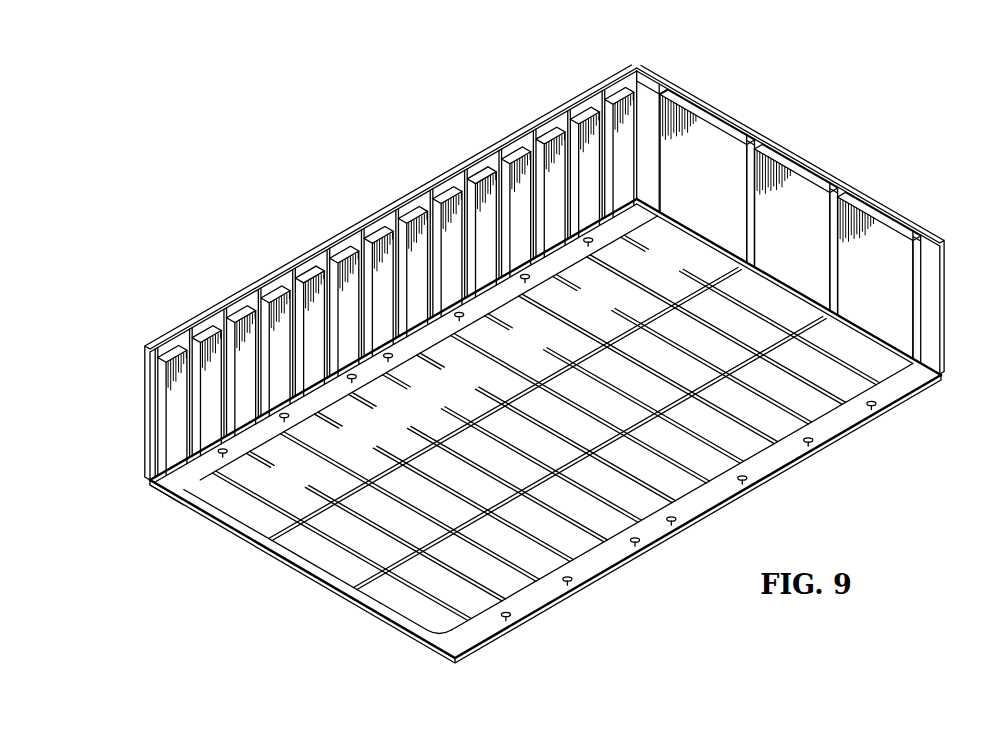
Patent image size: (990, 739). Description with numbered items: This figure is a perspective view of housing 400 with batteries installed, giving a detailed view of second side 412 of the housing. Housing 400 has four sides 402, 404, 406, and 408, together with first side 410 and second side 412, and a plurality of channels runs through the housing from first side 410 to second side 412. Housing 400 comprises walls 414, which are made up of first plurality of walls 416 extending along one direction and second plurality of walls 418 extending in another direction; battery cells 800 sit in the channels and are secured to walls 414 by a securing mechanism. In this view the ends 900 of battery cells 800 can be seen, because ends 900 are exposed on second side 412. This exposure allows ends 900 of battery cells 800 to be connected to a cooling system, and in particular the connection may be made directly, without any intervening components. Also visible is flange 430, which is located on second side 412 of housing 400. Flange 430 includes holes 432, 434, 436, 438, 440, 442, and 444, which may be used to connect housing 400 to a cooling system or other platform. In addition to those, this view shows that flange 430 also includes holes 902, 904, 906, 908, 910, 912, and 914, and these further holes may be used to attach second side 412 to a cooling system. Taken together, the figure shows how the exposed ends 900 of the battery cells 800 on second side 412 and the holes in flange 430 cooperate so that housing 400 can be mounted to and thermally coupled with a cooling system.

The housing 400 is at (262, 146).
The side 402 is at (217, 521).
The side 404 is at (915, 397).
The side 406 is at (768, 160).
The side 408 is at (185, 410).
The first side 410 is at (456, 186).
The second side 412 is at (462, 655).
The walls 414 is at (377, 594).
The first plurality of walls 416 is at (276, 548).
The second plurality of walls 418 is at (440, 620).
The flange 430 is at (176, 490).
The hole 432 is at (224, 457).
The hole 434 is at (286, 421).
The hole 436 is at (353, 382).
The hole 438 is at (389, 361).
The hole 440 is at (460, 320).
The hole 442 is at (526, 282).
The hole 444 is at (589, 246).
The battery cells 800 is at (320, 578).
The ends 900 is at (346, 590).
The hole 902 is at (506, 621).
The hole 904 is at (568, 586).
The hole 906 is at (636, 547).
The hole 908 is at (672, 526).
The hole 910 is at (743, 485).
The hole 912 is at (809, 447).
The hole 914 is at (872, 410).